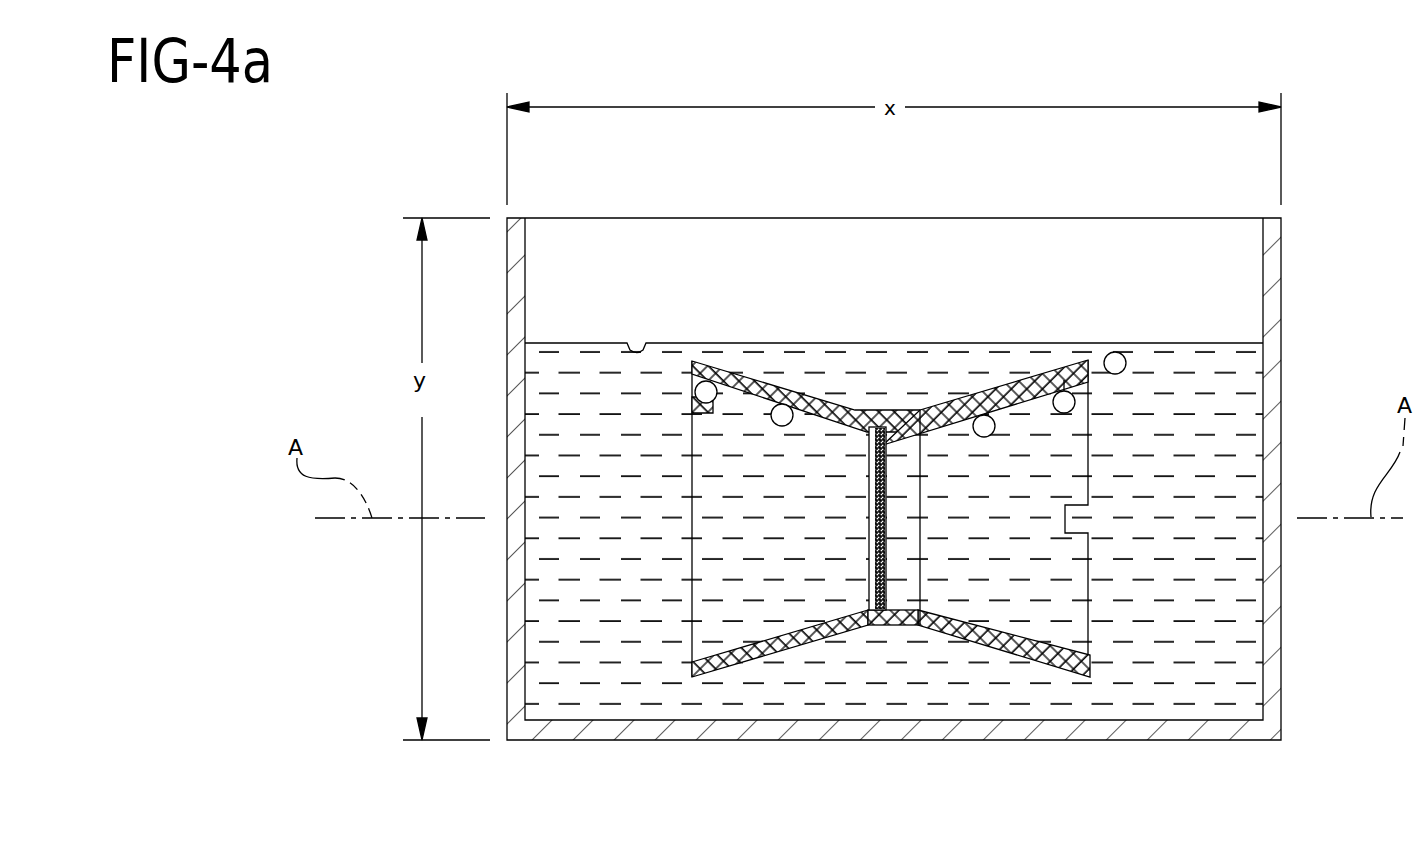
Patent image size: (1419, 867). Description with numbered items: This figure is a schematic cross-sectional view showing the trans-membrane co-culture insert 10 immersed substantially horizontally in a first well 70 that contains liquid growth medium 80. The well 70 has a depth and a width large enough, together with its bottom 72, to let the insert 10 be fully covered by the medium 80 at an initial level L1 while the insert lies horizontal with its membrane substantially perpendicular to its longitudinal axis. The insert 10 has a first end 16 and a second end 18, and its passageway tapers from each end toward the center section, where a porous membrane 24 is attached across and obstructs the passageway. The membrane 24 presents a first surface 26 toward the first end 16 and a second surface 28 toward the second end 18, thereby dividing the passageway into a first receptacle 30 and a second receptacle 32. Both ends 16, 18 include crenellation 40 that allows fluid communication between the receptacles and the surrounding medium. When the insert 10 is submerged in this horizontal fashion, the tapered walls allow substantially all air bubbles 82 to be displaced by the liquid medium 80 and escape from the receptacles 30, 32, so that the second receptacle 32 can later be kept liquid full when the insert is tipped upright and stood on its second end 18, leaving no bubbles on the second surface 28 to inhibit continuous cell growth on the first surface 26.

The trans-membrane co-culture insert 10 is at (688, 562).
The first end 16 is at (817, 395).
The second end 18 is at (937, 403).
The porous membrane 24 is at (855, 486).
The first surface 26 is at (880, 553).
The second surface 28 is at (866, 548).
The first receptacle 30 is at (1043, 608).
The second receptacle 32 is at (718, 610).
The crenellation 40 is at (700, 668).
The first well 70 is at (1290, 665).
The bottom 72 is at (985, 638).
The liquid growth medium 80 is at (1223, 423).
The air bubbles 82 is at (780, 408).
The initial level L1 is at (1227, 342).